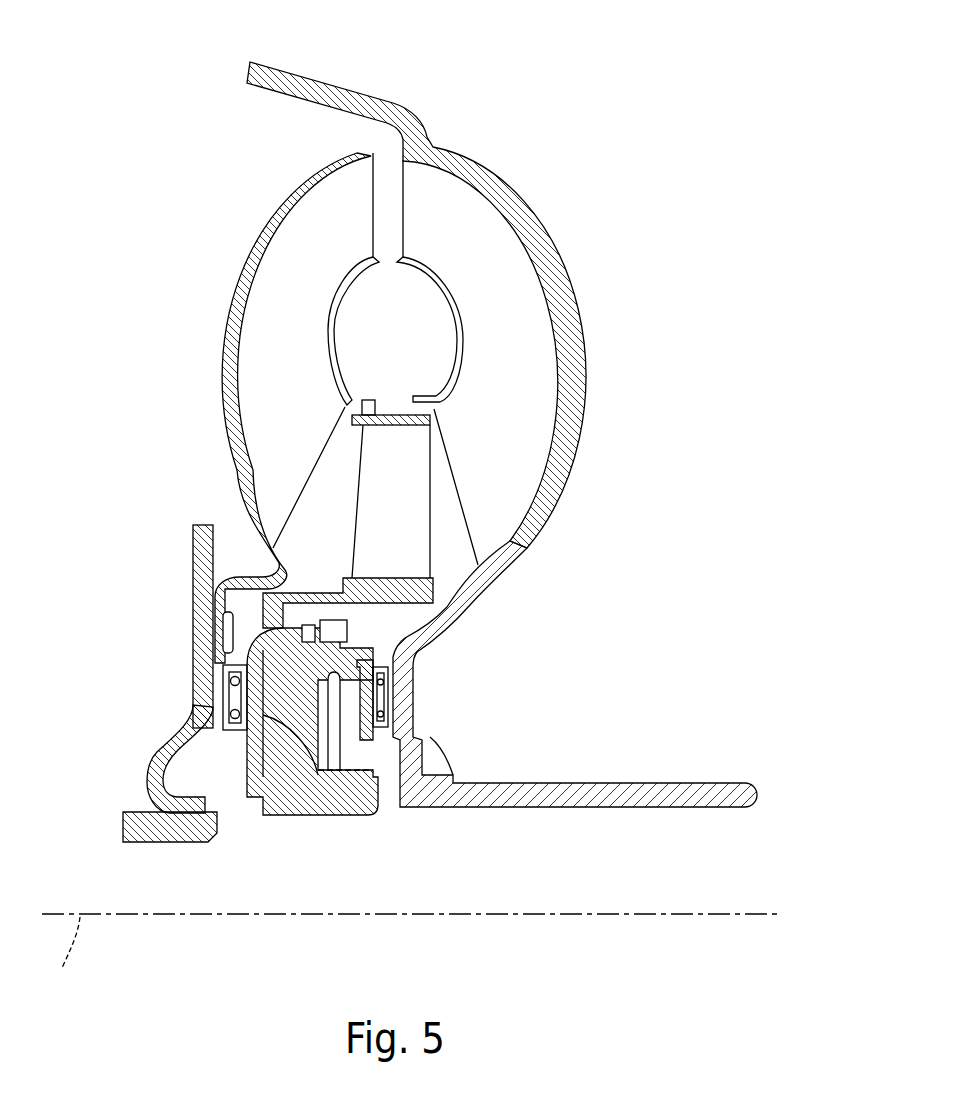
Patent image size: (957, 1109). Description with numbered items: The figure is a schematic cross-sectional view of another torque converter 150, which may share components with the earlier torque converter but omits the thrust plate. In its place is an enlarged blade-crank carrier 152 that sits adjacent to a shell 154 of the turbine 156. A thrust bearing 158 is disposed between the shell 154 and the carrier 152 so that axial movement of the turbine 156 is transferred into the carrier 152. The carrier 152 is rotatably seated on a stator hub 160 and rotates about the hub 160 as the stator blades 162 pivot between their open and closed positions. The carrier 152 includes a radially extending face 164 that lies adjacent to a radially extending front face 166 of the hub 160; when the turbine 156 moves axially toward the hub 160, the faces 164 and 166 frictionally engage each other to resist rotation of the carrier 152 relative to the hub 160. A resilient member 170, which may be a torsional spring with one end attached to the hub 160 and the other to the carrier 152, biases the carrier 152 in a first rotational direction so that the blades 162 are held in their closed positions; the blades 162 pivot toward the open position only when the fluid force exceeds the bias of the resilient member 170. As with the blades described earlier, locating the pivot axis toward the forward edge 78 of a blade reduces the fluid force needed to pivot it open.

The torque converter 150 is at (577, 85).
The turbine 156 is at (300, 255).
The forward edge 78 is at (357, 497).
The blade-crank carrier 152 is at (230, 625).
The shell 154 is at (228, 637).
The resilient member 170 is at (283, 597).
The stator blades 162 is at (411, 502).
The stator hub 160 is at (385, 618).
The thrust bearing 158 is at (248, 730).
The radially extending face 164 is at (253, 757).
The front face 166 is at (265, 717).